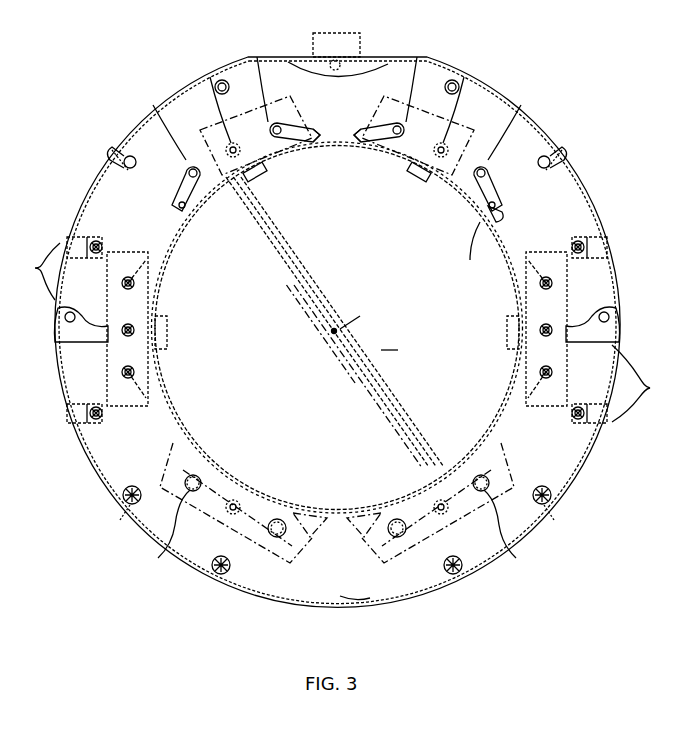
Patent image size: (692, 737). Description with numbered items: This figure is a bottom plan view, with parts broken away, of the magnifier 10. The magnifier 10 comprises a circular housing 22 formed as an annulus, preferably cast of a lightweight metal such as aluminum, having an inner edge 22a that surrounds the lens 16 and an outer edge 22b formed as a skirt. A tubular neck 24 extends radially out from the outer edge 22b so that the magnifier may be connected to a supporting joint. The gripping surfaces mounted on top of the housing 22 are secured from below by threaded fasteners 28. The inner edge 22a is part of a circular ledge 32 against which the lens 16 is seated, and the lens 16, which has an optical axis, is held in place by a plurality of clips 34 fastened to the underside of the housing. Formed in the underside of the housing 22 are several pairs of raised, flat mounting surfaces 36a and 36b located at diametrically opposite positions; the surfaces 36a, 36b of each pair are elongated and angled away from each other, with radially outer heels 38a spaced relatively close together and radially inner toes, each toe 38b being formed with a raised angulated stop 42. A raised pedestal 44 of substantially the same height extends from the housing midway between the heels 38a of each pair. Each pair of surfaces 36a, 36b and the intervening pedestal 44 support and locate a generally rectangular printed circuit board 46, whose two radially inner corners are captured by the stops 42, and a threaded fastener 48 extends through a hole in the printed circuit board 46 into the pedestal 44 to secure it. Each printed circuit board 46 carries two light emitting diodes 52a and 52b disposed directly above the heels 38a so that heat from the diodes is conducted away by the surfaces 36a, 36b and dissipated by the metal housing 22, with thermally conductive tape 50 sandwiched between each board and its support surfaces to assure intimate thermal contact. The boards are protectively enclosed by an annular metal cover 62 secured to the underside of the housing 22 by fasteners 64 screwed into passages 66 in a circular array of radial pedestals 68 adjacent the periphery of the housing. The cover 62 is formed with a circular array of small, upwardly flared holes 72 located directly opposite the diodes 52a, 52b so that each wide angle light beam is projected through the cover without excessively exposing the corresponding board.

The magnifier 10 is at (52, 85).
The lens 16 is at (391, 341).
The circular housing 22 is at (58, 408).
The inner edge 22a is at (306, 500).
The outer edge 22b is at (66, 442).
The tubular neck 24 is at (360, 40).
The threaded fasteners 28 is at (35, 268).
The circular ledge 32 is at (270, 184).
The clips 34 is at (249, 186).
The mounting surface 36a is at (190, 198).
The mounting surface 36b is at (318, 150).
The heels 38a is at (258, 57).
The toe 38b is at (173, 207).
The raised angulated stop 42 is at (182, 212).
The raised pedestal 44 is at (208, 88).
The printed circuit board 46 is at (120, 160).
The threaded fastener 48 is at (122, 332).
The thermally conductive tape 50 is at (496, 200).
The light emitting diode 52a is at (122, 372).
The light emitting diode 52b is at (136, 285).
The annular metal cover 62 is at (370, 598).
The fasteners 64 is at (122, 500).
The passages 66 is at (122, 158).
The radial pedestals 68 is at (126, 152).
The holes 72 is at (158, 558).